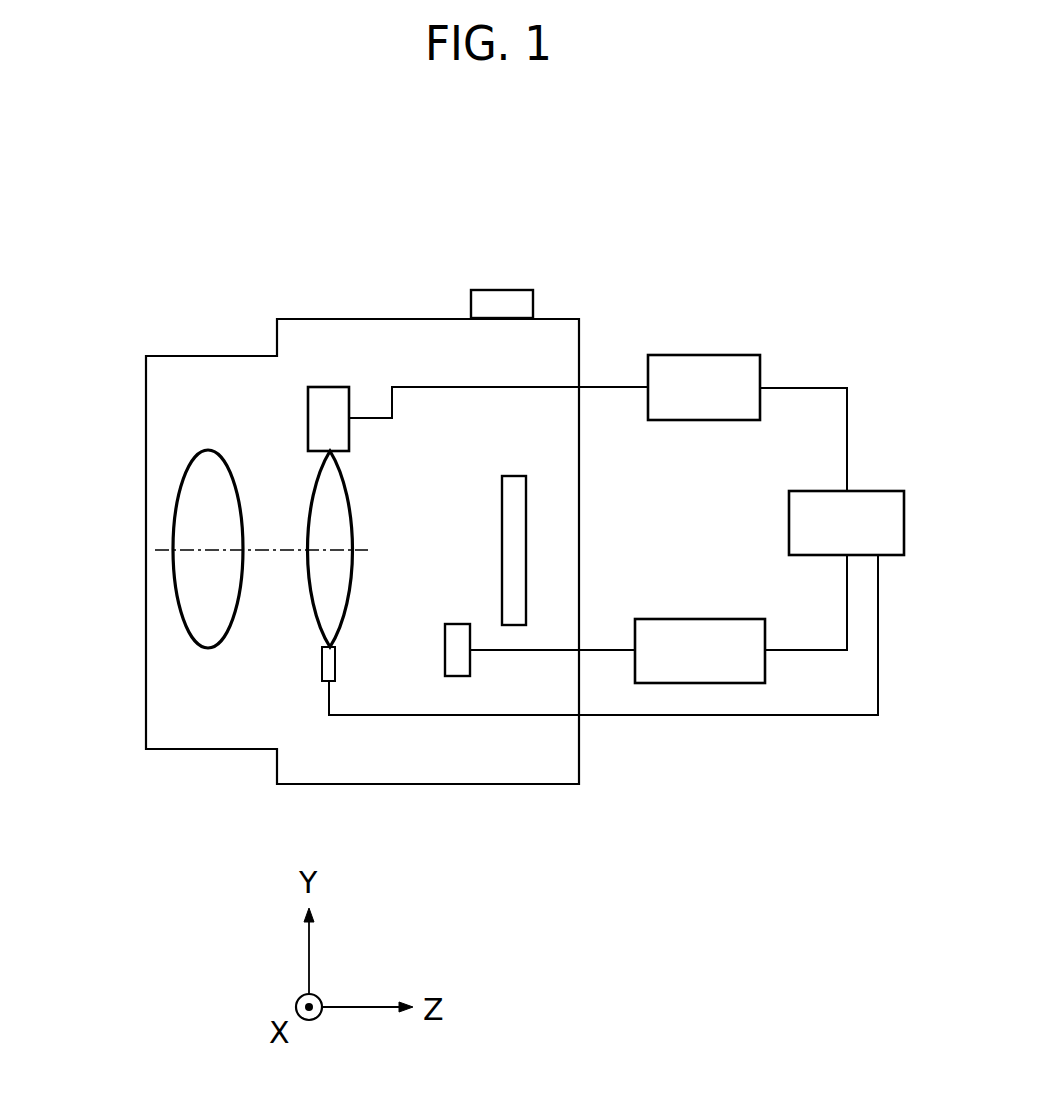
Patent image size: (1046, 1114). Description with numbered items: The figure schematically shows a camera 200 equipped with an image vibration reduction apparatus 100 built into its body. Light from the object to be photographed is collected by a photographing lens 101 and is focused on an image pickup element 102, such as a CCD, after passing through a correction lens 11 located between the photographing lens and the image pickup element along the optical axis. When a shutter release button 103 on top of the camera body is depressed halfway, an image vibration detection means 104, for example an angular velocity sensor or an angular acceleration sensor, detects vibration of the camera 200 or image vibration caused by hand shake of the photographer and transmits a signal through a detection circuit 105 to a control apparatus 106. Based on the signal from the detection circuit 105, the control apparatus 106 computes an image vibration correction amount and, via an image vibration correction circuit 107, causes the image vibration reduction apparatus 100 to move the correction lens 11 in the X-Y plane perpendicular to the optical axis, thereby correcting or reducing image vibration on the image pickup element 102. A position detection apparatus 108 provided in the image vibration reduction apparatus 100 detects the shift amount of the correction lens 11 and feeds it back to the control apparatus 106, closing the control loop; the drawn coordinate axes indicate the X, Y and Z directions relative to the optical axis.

The camera 200 is at (620, 323).
The image vibration reduction apparatus 100 is at (300, 411).
The photographing lens 101 is at (193, 490).
The correction lens 11 is at (325, 612).
The image pickup element 102 is at (515, 508).
The shutter release button 103 is at (484, 296).
The image vibration detection means 104 is at (460, 635).
The detection circuit 105 is at (708, 638).
The control apparatus 106 is at (880, 502).
The image vibration correction circuit 107 is at (725, 365).
The position detection apparatus 108 is at (325, 665).